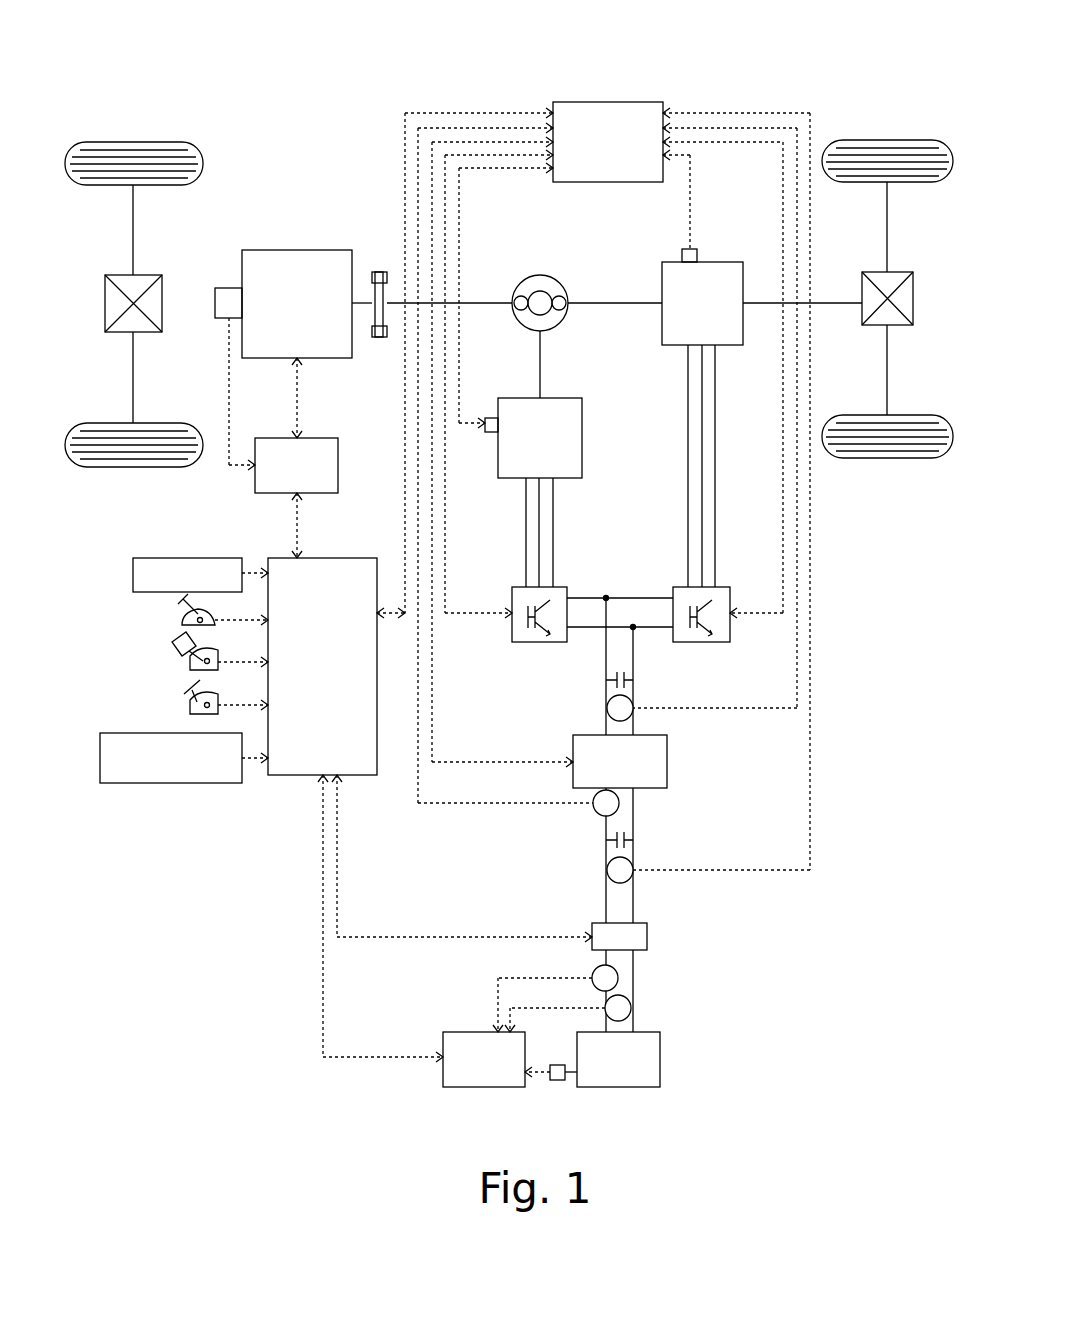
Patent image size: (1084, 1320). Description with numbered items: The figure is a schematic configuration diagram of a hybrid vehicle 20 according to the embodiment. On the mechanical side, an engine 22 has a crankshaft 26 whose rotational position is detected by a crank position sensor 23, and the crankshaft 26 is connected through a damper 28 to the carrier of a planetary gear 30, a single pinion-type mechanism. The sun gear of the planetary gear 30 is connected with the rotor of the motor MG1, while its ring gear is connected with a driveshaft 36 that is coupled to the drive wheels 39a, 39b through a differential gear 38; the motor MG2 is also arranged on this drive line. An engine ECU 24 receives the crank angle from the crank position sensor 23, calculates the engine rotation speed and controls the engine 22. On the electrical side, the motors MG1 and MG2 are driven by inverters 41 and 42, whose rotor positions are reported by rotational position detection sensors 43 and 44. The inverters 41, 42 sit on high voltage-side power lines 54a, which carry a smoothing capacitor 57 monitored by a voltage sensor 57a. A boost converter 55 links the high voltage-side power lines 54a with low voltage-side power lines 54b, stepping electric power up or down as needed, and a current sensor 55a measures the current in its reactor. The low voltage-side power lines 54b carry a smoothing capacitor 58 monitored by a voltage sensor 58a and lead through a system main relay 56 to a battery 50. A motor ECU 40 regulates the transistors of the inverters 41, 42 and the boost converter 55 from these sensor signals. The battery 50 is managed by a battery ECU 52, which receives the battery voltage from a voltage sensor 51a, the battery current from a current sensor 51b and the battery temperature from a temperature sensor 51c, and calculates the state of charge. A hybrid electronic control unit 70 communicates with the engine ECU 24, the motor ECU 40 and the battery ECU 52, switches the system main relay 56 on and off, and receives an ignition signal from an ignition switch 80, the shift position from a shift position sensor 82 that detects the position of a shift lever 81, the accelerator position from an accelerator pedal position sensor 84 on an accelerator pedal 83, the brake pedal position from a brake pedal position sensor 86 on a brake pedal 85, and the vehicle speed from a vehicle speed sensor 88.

The hybrid vehicle 20 is at (731, 72).
The engine 22 is at (295, 250).
The crank position sensor 23 is at (229, 288).
The engine ECU 24 is at (320, 438).
The crankshaft 26 is at (355, 312).
The damper 28 is at (378, 272).
The planetary gear 30 is at (540, 275).
The driveshaft 36 is at (836, 303).
The differential gear 38 is at (899, 272).
The drive wheel 39a is at (888, 140).
The drive wheel 39b is at (888, 458).
The motor ECU 40 is at (609, 102).
The inverter 41 is at (558, 587).
The inverter 42 is at (722, 587).
The rotational position detection sensor 43 is at (489, 432).
The rotational position detection sensor 44 is at (690, 249).
The motor MG1 is at (512, 398).
The motor MG2 is at (736, 262).
The battery 50 is at (660, 1057).
The voltage sensor 51a is at (632, 1008).
The current sensor 51b is at (619, 978).
The temperature sensor 51c is at (557, 1080).
The battery ECU 52 is at (472, 1032).
The high voltage-side power lines 54a is at (606, 656).
The low voltage-side power lines 54b is at (606, 894).
The boost converter 55 is at (667, 762).
The current sensor 55a is at (620, 803).
The system main relay 56 is at (647, 937).
The smoothing capacitor 57 is at (633, 679).
The voltage sensor 57a is at (607, 708).
The smoothing capacitor 58 is at (633, 840).
The voltage sensor 58a is at (607, 870).
The hybrid electronic control unit 70 is at (333, 558).
The ignition switch 80 is at (133, 574).
The shift lever 81 is at (180, 608).
The shift position sensor 82 is at (182, 622).
The accelerator pedal 83 is at (175, 650).
The accelerator pedal position sensor 84 is at (190, 665).
The brake pedal 85 is at (185, 694).
The brake pedal position sensor 86 is at (190, 710).
The vehicle speed sensor 88 is at (95, 767).